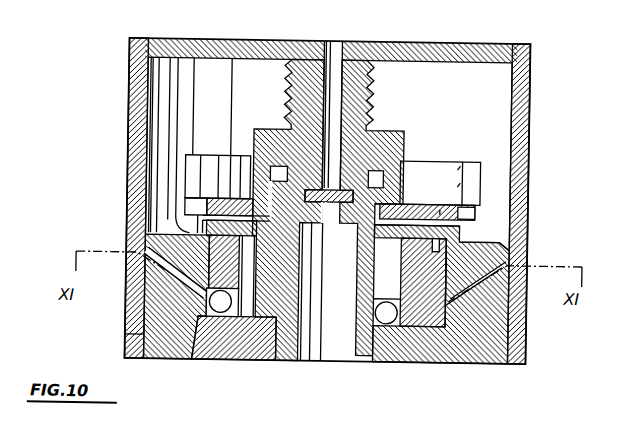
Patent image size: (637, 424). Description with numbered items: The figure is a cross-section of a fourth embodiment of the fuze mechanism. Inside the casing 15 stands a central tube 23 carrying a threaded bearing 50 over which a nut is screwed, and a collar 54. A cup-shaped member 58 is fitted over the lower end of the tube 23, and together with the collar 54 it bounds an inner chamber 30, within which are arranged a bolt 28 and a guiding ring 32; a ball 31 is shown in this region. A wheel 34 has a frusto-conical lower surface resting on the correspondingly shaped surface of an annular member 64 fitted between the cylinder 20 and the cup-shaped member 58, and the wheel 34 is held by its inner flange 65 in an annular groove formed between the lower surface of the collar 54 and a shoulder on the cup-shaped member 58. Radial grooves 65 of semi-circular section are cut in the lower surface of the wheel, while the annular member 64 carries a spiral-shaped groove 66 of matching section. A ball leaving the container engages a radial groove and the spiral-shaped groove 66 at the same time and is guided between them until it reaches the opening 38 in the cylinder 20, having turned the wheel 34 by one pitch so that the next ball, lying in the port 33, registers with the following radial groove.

The casing 15 is at (535, 182).
The cylinder 20 is at (135, 301).
The central tube 23 is at (345, 60).
The bolt 28 is at (322, 204).
The inner chamber 30 is at (388, 264).
The ball 31 is at (386, 312).
The guiding ring 32 is at (410, 280).
The port 33 is at (238, 345).
The wheel 34 is at (508, 246).
The opening 38 is at (128, 246).
The threaded bearing 50 is at (373, 95).
The collar 54 is at (422, 226).
The cup-shaped member 58 is at (433, 315).
The annular member 64 is at (168, 350).
The radial grooves 65 is at (131, 243).
The spiral-shaped groove 66 is at (191, 352).